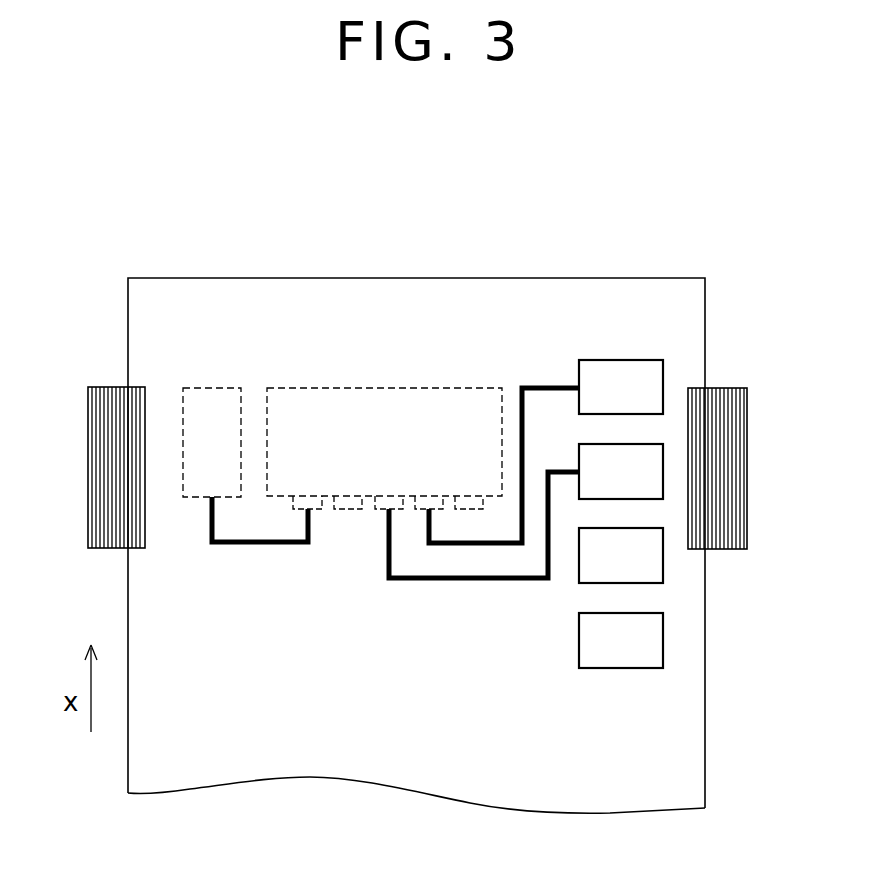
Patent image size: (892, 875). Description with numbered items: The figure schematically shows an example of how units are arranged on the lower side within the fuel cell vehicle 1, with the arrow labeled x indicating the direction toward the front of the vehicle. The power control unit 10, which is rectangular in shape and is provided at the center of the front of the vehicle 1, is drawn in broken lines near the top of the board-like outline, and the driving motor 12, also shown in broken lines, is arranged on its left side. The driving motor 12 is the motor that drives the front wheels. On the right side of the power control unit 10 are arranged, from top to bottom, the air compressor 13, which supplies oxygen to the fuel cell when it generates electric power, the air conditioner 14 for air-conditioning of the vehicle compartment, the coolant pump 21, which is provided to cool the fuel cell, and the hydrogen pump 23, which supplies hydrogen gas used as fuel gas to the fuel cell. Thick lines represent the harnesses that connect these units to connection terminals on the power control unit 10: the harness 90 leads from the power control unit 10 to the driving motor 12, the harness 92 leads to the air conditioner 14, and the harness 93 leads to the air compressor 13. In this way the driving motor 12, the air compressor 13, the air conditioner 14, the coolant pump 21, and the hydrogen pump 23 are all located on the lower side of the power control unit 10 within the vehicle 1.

The fuel cell vehicle 1 is at (438, 245).
The power control unit 10 is at (352, 388).
The driving motor 12 is at (217, 388).
The air compressor 13 is at (663, 387).
The air conditioner 14 is at (663, 470).
The coolant pump 21 is at (663, 560).
The hydrogen pump 23 is at (663, 638).
The harness 90 is at (205, 520).
The harness 92 is at (385, 532).
The harness 93 is at (433, 534).